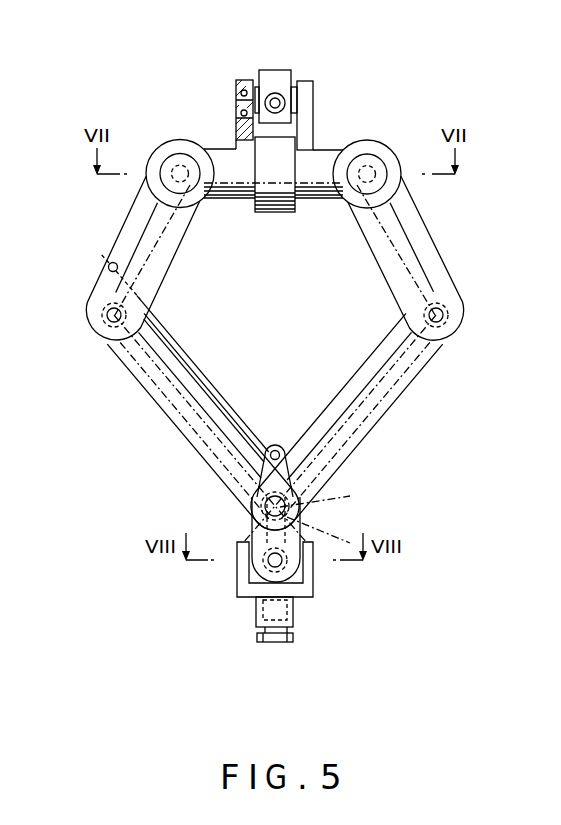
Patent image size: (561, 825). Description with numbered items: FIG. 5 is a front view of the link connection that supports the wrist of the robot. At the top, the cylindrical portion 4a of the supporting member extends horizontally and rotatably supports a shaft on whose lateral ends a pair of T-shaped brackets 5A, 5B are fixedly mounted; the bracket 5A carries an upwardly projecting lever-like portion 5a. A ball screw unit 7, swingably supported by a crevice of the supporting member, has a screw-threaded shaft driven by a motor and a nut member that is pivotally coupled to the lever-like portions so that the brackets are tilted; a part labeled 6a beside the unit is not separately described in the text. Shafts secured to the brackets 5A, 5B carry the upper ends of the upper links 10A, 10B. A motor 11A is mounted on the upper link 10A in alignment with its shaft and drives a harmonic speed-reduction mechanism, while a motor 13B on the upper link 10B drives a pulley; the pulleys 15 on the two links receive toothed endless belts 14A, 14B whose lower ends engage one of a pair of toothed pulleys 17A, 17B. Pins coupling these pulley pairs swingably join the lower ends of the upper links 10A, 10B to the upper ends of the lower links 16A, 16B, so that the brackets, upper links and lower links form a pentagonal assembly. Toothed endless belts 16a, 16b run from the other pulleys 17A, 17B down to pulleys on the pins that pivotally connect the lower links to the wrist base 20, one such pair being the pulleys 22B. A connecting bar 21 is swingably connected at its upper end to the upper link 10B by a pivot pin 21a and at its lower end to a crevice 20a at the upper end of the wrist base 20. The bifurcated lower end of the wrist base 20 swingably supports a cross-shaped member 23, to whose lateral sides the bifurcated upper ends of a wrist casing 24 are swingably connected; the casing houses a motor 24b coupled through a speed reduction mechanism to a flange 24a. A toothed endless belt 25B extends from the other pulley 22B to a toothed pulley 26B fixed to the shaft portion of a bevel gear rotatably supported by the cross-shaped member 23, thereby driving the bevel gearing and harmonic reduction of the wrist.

The cylindrical portion 4a is at (275, 213).
The lever-like portion 5a is at (304, 81).
The T-shaped bracket 5A is at (318, 200).
The T-shaped bracket 5B is at (226, 200).
The bearing block 6a is at (245, 80).
The ball screw unit 7 is at (275, 70).
The upper link 10A is at (419, 212).
The upper link 10B is at (130, 211).
The motor 11A is at (364, 166).
The motor 13B is at (179, 166).
The toothed endless belt 14A is at (413, 247).
The toothed endless belt 14B is at (170, 253).
The pulley 15 is at (164, 151).
The lower link 16A is at (405, 389).
The lower link 16B is at (128, 369).
The toothed endless belt 16a is at (358, 428).
The toothed endless belt 16b is at (174, 406).
The toothed pulleys 17A is at (448, 317).
The toothed pulleys 17B is at (101, 316).
The wrist base 20 is at (252, 516).
The crevice 20a is at (276, 445).
The connecting bar 21 is at (219, 392).
The pivot pin 21a is at (108, 266).
The pulley pair 22B is at (283, 509).
The cross-shaped member 23 is at (250, 578).
The wrist casing 24 is at (306, 598).
The flange 24a is at (276, 645).
The motor 24b is at (258, 612).
The toothed endless belt 25B is at (303, 527).
The toothed pulley 26B is at (282, 563).